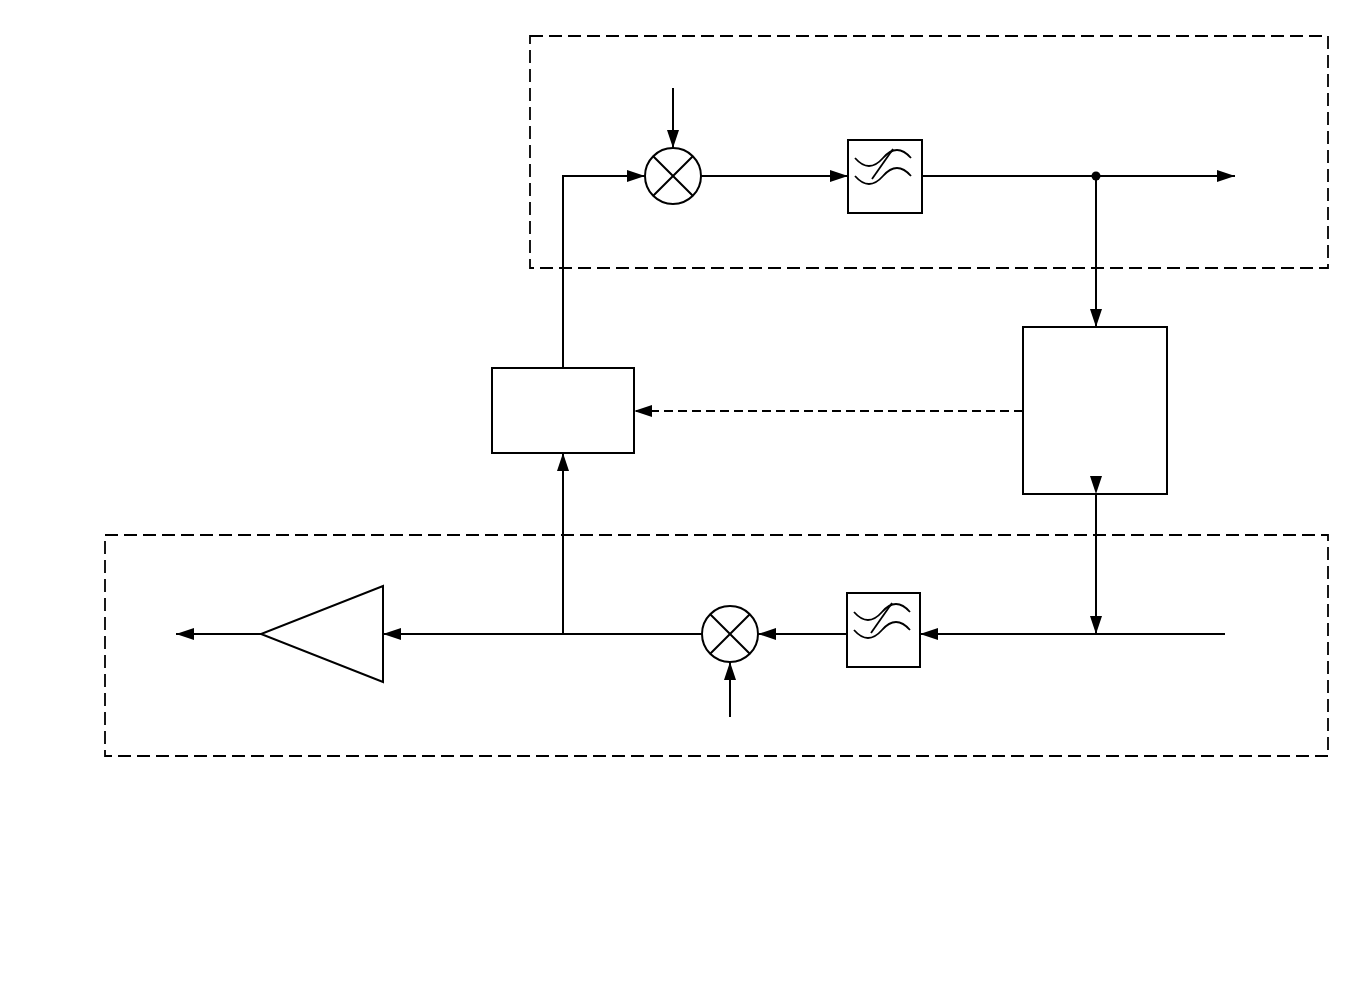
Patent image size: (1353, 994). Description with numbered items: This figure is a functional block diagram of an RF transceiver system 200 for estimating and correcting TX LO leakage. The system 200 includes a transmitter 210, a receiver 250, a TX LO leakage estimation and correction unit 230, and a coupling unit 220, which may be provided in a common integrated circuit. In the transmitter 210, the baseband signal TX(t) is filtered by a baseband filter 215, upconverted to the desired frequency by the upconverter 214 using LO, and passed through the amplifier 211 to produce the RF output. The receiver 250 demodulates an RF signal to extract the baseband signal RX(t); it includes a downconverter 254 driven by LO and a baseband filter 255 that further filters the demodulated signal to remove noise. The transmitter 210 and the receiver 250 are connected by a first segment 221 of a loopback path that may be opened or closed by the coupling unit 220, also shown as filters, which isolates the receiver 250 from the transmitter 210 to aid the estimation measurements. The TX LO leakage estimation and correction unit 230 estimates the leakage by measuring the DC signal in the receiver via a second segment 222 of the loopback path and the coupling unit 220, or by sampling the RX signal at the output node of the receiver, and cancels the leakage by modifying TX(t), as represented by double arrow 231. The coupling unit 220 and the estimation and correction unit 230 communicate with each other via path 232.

The RF transceiver system 200 is at (716, 446).
The transmitter 210 is at (716, 645).
The amplifier 211 is at (293, 620).
The upconverter 214 is at (708, 652).
The baseband filter 215 is at (885, 593).
The coupling unit 220 is at (563, 410).
The first segment of loopback path 221 is at (563, 323).
The second segment of loopback path 222 is at (1097, 302).
The TX LO leakage estimation and correction unit 230 is at (1095, 410).
The double arrow 231 is at (1097, 565).
The path 232 is at (863, 410).
The receiver 250 is at (929, 152).
The downconverter 254 is at (690, 197).
The baseband filter 255 is at (883, 140).